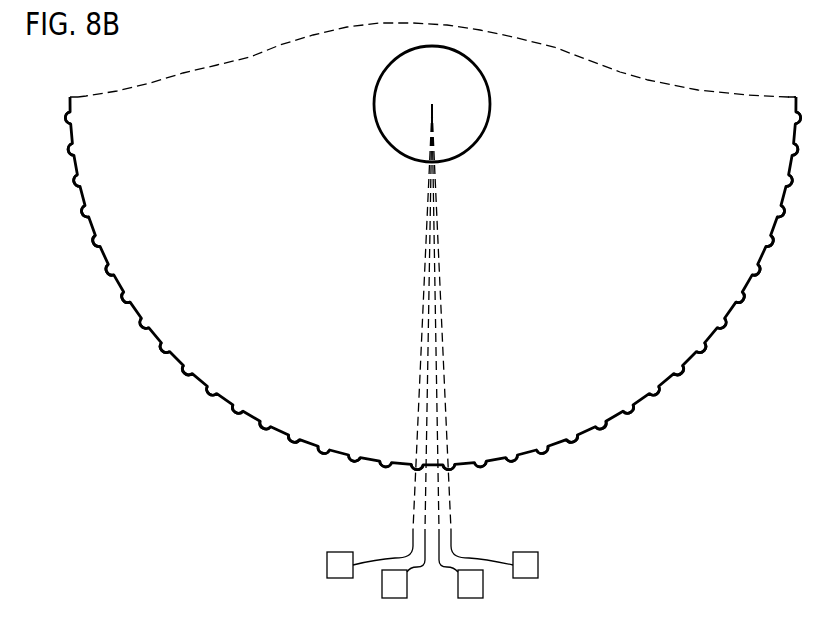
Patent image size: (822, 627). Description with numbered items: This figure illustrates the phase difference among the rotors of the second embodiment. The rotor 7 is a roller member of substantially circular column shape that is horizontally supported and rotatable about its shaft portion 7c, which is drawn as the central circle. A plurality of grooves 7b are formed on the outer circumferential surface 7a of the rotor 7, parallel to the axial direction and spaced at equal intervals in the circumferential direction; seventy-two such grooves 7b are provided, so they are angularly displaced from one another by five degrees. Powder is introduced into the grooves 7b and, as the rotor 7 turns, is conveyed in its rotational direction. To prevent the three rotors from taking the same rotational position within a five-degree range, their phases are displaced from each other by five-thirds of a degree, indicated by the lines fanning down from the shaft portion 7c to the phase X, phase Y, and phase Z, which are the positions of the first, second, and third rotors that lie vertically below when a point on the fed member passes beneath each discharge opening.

The rotor 7 is at (117, 382).
The outer circumferential surface 7a is at (248, 420).
The grooves 7b is at (213, 390).
The shaft portion 7c is at (374, 104).
The phase X is at (432, 554).
The phase Y is at (403, 564).
The phase Z is at (461, 564).